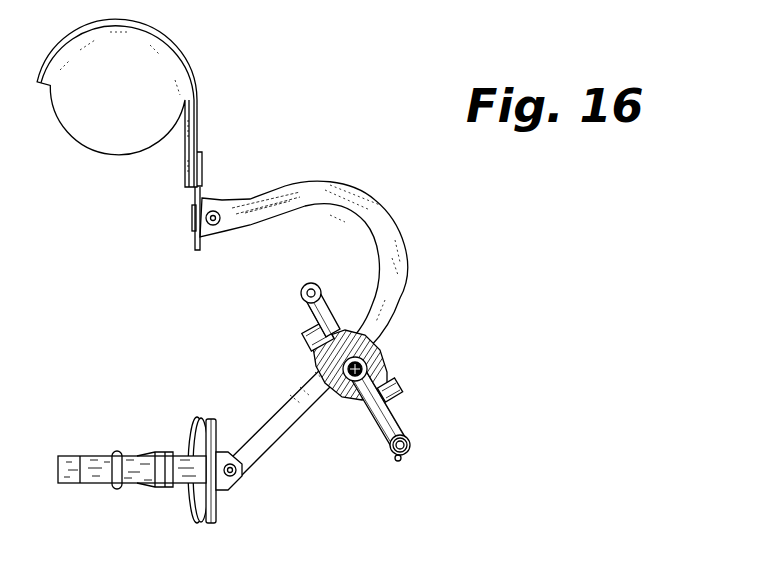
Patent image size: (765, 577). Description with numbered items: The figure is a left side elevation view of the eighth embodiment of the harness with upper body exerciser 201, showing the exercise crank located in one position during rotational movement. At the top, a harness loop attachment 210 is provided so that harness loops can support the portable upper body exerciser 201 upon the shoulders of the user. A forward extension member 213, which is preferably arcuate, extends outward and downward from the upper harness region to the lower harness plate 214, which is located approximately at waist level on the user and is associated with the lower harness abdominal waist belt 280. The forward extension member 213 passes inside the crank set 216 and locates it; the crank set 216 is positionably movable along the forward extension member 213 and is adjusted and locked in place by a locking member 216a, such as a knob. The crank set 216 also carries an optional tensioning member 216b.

The eighth embodiment of the harness with upper body exerciser 201 is at (516, 276).
The harness loop attachment 210 is at (197, 74).
The forward extension member 213 is at (402, 245).
The lower harness plate 214 is at (218, 498).
The crank set 216 is at (386, 356).
The locking member 216a is at (302, 332).
The tensioning member 216b is at (404, 397).
The lower harness abdominal waist belt 280 is at (117, 452).